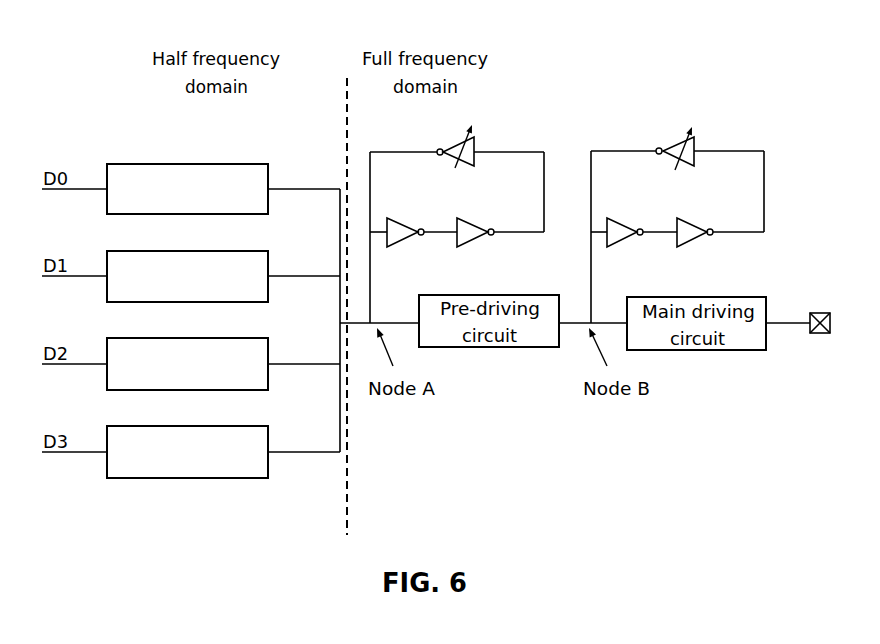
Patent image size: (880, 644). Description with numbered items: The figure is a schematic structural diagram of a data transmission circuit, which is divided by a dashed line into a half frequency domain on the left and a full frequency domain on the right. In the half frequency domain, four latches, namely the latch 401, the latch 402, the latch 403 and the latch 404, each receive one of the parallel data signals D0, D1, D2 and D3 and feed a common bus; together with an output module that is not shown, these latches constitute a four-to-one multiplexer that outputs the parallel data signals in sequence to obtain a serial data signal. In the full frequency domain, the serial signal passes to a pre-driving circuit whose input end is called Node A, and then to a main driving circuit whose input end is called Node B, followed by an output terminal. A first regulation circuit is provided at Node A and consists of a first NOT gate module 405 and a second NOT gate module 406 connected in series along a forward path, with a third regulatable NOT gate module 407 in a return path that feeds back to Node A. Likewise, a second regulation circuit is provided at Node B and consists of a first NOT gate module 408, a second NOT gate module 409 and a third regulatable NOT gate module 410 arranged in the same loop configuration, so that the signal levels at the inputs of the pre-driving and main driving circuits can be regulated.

The latch 401 is at (209, 158).
The latch 402 is at (229, 248).
The latch 403 is at (235, 334).
The latch 404 is at (235, 422).
The first NOT gate module 405 is at (398, 214).
The second NOT gate module 406 is at (480, 214).
The third regulatable NOT gate module 407 is at (465, 128).
The first NOT gate module 408 is at (617, 215).
The second NOT gate module 409 is at (700, 214).
The third regulatable NOT gate module 410 is at (683, 128).